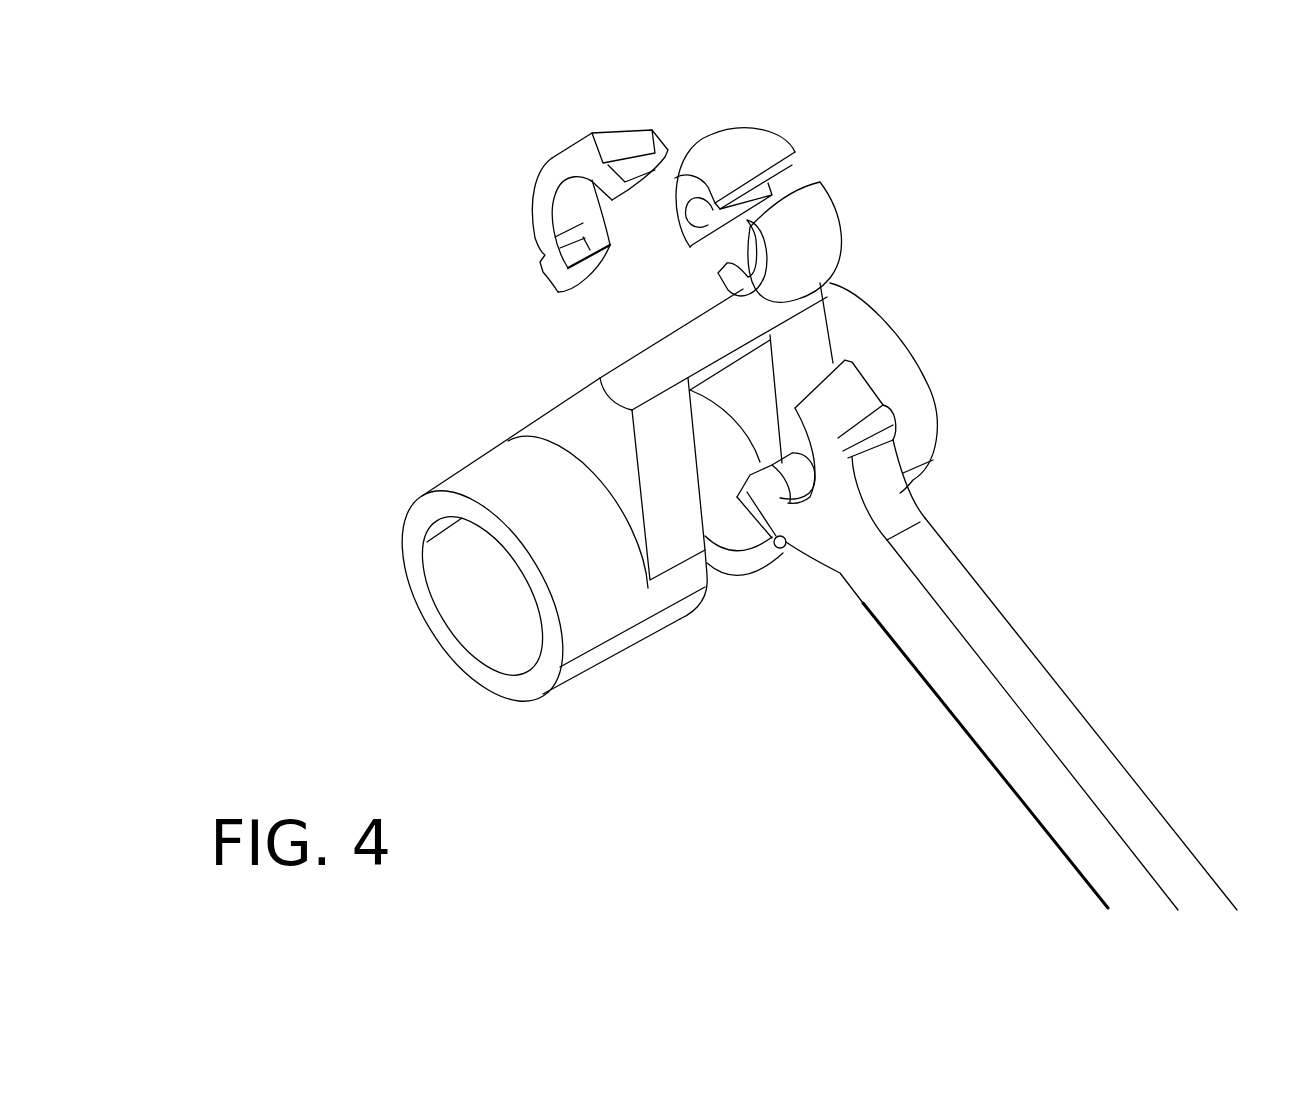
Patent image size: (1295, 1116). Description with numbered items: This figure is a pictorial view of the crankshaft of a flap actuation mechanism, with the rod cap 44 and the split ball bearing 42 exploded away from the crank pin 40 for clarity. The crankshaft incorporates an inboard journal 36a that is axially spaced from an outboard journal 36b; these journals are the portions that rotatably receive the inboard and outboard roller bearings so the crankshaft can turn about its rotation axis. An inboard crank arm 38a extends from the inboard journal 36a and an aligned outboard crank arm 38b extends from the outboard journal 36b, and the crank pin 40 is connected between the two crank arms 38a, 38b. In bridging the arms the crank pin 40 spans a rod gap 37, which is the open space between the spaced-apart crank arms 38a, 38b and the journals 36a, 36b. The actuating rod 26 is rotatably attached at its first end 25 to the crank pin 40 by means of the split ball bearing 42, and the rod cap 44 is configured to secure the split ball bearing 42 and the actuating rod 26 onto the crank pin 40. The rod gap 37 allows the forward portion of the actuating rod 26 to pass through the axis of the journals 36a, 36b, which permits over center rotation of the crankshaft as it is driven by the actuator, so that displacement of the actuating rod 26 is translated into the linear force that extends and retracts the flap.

The first end 25 is at (898, 508).
The actuating rod 26 is at (1028, 688).
The inboard journal 36a is at (512, 488).
The outboard journal 36b is at (893, 357).
The rod gap 37 is at (714, 437).
The inboard crank arm 38a is at (593, 410).
The outboard crank arm 38b is at (817, 338).
The crank pin 40 is at (707, 345).
The split ball bearing 42 is at (747, 165).
The rod cap 44 is at (553, 155).